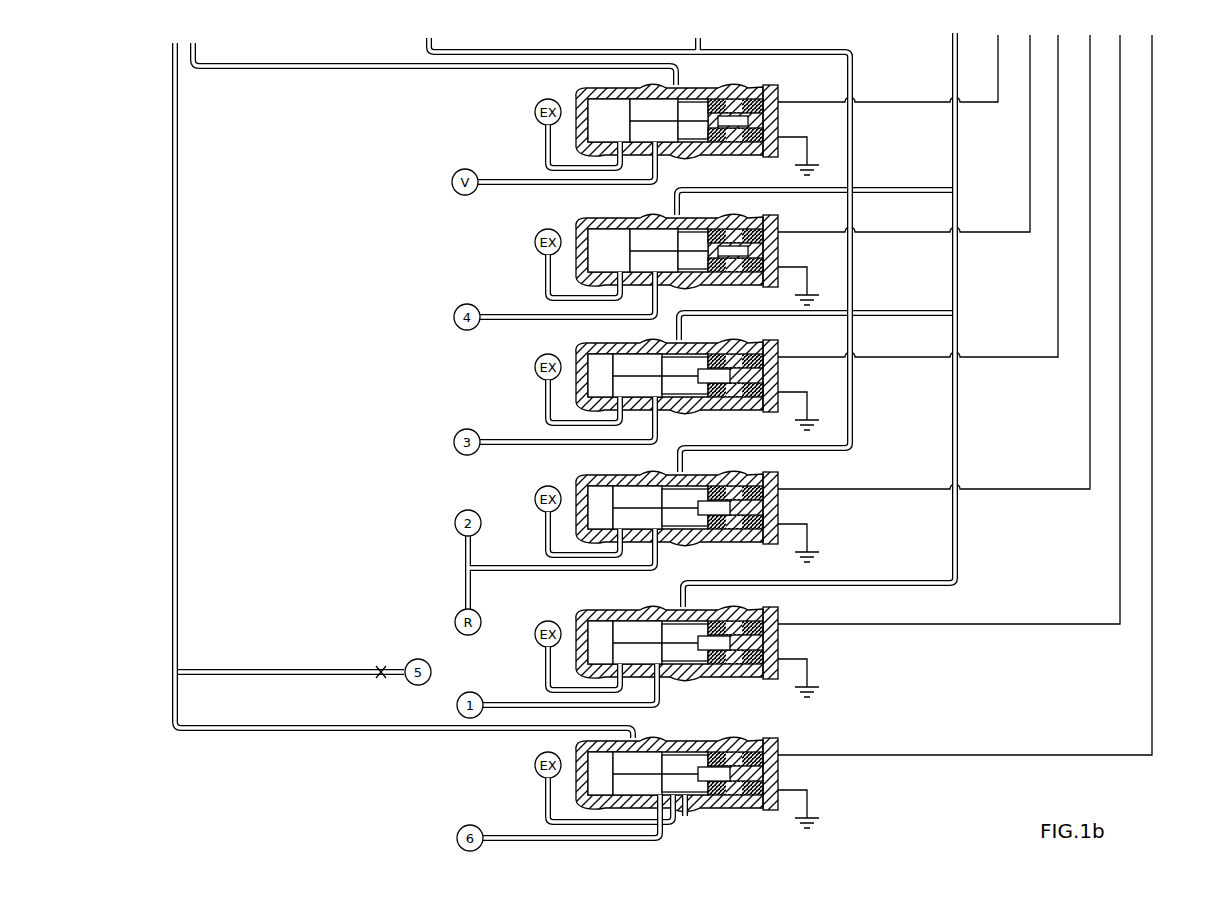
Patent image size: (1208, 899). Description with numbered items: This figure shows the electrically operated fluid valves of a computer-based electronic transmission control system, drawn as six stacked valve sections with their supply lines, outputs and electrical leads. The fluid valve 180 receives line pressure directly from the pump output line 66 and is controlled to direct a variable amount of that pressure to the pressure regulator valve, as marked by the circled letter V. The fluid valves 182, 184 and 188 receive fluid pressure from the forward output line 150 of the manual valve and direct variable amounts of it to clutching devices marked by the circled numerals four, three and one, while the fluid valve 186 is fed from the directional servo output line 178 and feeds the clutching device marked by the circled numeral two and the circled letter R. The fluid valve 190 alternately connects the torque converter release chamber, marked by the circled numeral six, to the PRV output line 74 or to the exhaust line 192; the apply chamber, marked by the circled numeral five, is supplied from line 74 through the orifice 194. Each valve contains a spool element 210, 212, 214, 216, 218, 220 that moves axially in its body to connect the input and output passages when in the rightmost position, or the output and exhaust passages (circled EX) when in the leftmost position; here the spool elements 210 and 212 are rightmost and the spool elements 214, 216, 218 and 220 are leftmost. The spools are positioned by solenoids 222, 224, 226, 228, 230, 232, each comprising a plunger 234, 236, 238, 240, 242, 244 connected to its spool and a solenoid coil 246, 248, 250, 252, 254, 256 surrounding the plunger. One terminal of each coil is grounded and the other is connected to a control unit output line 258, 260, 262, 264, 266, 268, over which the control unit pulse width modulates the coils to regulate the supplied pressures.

The pump output line 66 is at (200, 72).
The PRV output line 74 is at (177, 250).
The forward output line 150 is at (430, 46).
The directional servo output line 178 is at (698, 82).
The fluid valve 180 is at (577, 94).
The fluid valve 182 is at (577, 222).
The fluid valve 184 is at (577, 352).
The fluid valve 186 is at (577, 482).
The fluid valve 188 is at (577, 612).
The fluid valve 190 is at (580, 758).
The exhaust line 192 is at (545, 802).
The orifice 194 is at (381, 671).
The spool element 210 is at (720, 88).
The spool element 212 is at (652, 220).
The spool element 214 is at (642, 347).
The spool element 216 is at (641, 476).
The spool element 218 is at (642, 609).
The spool element 220 is at (686, 815).
The solenoid 222 is at (778, 112).
The solenoid 224 is at (778, 240).
The solenoid 226 is at (778, 368).
The solenoid 228 is at (778, 500).
The solenoid 230 is at (778, 635).
The solenoid 232 is at (778, 768).
The plunger 234 is at (715, 146).
The plunger 236 is at (760, 226).
The plunger 238 is at (712, 405).
The plunger 240 is at (712, 535).
The plunger 242 is at (718, 670).
The plunger 244 is at (720, 805).
The solenoid coil 246 is at (760, 90).
The solenoid coil 248 is at (745, 282).
The solenoid coil 250 is at (740, 402).
The solenoid coil 252 is at (738, 535).
The solenoid coil 254 is at (738, 672).
The solenoid coil 256 is at (745, 808).
The output line 258 is at (998, 110).
The output line 260 is at (1030, 240).
The output line 262 is at (1058, 365).
The output line 264 is at (1090, 495).
The output line 266 is at (1030, 625).
The output line 268 is at (960, 742).